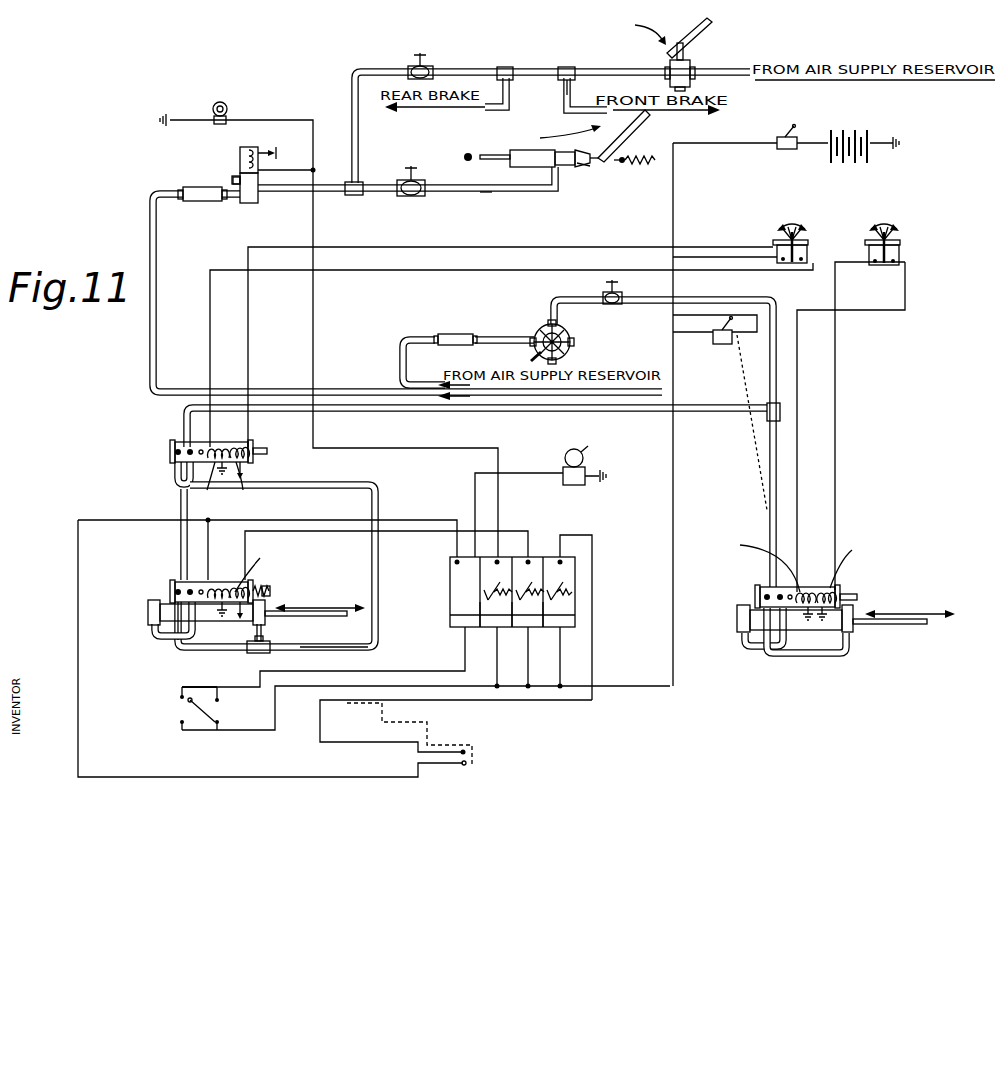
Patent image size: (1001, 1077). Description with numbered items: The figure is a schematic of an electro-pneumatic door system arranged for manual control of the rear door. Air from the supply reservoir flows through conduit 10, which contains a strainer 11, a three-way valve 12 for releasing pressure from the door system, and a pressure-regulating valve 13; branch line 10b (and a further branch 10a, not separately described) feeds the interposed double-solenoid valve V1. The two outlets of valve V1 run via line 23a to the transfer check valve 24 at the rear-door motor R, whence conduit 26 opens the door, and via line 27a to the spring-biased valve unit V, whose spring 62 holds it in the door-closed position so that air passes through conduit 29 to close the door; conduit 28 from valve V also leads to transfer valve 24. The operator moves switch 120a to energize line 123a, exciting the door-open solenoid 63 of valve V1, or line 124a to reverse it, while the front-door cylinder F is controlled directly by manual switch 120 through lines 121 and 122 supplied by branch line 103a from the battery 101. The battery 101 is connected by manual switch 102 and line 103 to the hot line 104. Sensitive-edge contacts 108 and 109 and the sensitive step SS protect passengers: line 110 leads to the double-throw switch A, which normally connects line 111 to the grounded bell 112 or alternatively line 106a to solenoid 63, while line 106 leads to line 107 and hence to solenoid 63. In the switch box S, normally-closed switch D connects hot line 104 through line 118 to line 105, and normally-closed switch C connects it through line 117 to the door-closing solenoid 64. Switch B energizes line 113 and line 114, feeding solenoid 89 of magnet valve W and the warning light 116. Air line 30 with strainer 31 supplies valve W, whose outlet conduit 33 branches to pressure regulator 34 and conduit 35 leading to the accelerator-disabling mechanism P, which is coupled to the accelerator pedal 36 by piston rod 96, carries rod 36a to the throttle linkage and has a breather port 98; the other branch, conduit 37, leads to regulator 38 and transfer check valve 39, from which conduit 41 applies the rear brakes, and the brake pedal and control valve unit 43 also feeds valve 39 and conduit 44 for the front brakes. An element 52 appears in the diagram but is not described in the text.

The conduit 10 is at (402, 357).
The air pipe branch 10a is at (770, 516).
The branch air supply line 10b is at (468, 414).
The strainer 11 is at (458, 333).
The three-way valve 12 is at (575, 348).
The pressure-regulating valve 13 is at (608, 306).
The air connection 23a is at (325, 485).
The transfer check valve 24 is at (250, 655).
The conduit 26 is at (263, 630).
The air connection 27a is at (183, 500).
The conduit 28 is at (180, 650).
The conduit 29 is at (153, 640).
The line 30 is at (160, 241).
The strainer 31 is at (195, 187).
The conduit 33 is at (352, 196).
The pressure regulator 34 is at (418, 197).
The conduit 35 is at (492, 196).
The accelerator pedal 36 is at (646, 117).
The rod 36a is at (466, 156).
The conduit 37 is at (236, 177).
The regulator 38 is at (414, 60).
The transfer check valve 39 is at (520, 48).
The conduit 41 is at (511, 89).
The brake pedal and control valve unit 43 is at (712, 22).
The conduit 44 is at (562, 100).
The switch 52 is at (710, 327).
The spring 62 is at (272, 590).
The door-open solenoid 63 is at (500, 527).
The door-closing solenoid 64 is at (555, 527).
The solenoid 89 is at (255, 150).
The piston rod 96 is at (622, 163).
The breather port 98 is at (587, 167).
The vehicle battery 101 is at (850, 132).
The manual switch 102 is at (785, 137).
The line 103 is at (678, 195).
The branch line 103a is at (735, 228).
The hot line 104 is at (618, 686).
The line 105 is at (500, 700).
The line 106 is at (190, 777).
The companion line 106a is at (407, 520).
The line 107 is at (209, 575).
The sensitive-edge contacts 108 is at (185, 710).
The sensitive-edge contacts 109 is at (180, 690).
The line 110 is at (370, 650).
The line 111 is at (554, 472).
The bell 112 is at (574, 449).
The line 113 is at (313, 240).
The line 114 is at (288, 120).
The warning light 116 is at (240, 85).
The line 117 is at (513, 531).
The line 118 is at (594, 593).
The switch 120 is at (900, 242).
The switch 120a is at (806, 240).
The line 121 is at (798, 385).
The line 122 is at (836, 388).
The line 123a is at (386, 274).
The line 124a is at (393, 250).
The single-pole double-throw switch A is at (442, 615).
The switch B is at (486, 630).
The switch C is at (519, 630).
The switch D is at (551, 630).
The cylinder F is at (728, 631).
The accelerator-disabling mechanism P is at (524, 167).
The rear-door motor R is at (140, 610).
The switch box S is at (442, 592).
The sensitive step SS is at (462, 740).
The control unit V is at (167, 580).
The double-solenoid control valve V1 is at (750, 588).
The magnet valve W is at (249, 210).